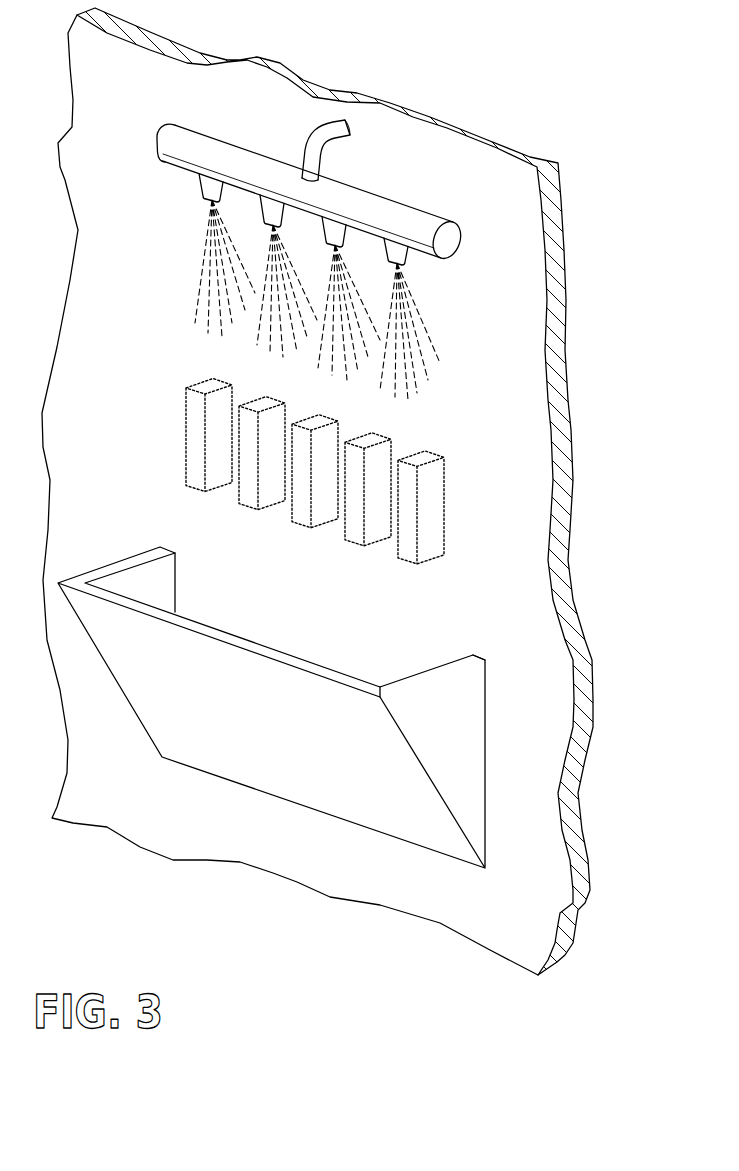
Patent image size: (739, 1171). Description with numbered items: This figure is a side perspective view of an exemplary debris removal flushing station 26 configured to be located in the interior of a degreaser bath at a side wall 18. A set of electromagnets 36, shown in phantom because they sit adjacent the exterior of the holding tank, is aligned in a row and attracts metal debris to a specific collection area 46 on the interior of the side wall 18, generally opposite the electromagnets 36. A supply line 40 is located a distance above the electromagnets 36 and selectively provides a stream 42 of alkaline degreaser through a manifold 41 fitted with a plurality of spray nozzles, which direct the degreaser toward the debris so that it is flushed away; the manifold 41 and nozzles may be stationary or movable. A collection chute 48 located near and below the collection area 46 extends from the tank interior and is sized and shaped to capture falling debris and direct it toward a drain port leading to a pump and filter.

The side wall 18 is at (530, 533).
The debris removal flushing station 26 is at (510, 113).
The set of electromagnets 36 is at (187, 423).
The supply line 40 is at (313, 143).
The manifold 41 is at (185, 147).
The stream of alkaline degreaser 42 is at (202, 269).
The collection area 46 is at (289, 531).
The collection chute 48 is at (258, 775).